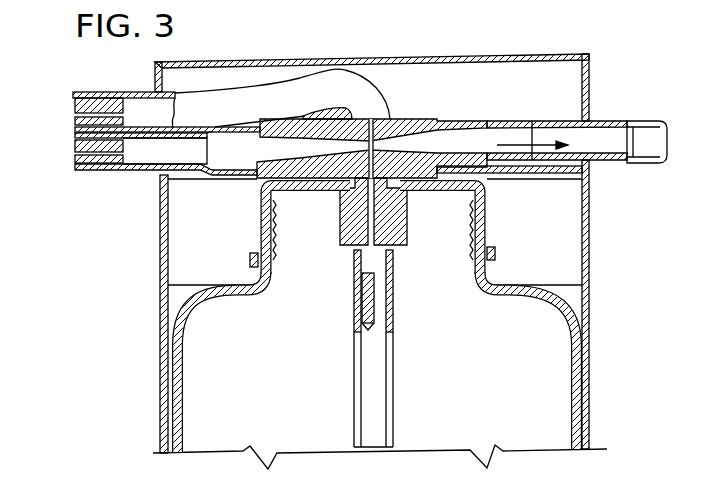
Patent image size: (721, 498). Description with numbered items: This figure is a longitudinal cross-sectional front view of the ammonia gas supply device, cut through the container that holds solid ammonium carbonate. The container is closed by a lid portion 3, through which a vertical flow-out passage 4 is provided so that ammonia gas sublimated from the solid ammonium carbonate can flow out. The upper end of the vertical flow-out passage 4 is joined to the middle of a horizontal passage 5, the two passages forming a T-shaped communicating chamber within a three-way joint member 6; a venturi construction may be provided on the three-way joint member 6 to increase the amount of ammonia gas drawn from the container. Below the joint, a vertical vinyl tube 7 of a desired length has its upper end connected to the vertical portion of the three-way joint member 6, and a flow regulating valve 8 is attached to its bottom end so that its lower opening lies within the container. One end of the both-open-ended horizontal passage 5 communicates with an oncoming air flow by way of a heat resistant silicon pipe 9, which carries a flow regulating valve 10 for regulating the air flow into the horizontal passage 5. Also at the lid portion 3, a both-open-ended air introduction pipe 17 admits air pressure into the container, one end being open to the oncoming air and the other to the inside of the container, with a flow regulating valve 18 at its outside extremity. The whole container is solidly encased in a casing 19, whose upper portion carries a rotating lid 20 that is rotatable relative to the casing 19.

The lid portion 3 is at (487, 215).
The vertical flow-out passage 4 is at (372, 152).
The horizontal passage 5 is at (489, 142).
The three-way joint member 6 is at (418, 119).
The vertical vinyl tube 7 is at (394, 320).
The flow regulating valve 8 is at (369, 320).
The heat resistant silicon pipe 9 is at (122, 152).
The flow regulating valve 10 is at (130, 150).
The air introduction pipe 17 is at (147, 92).
The flow regulating valve 18 is at (107, 100).
The casing 19 is at (592, 383).
The rotating lid 20 is at (590, 231).